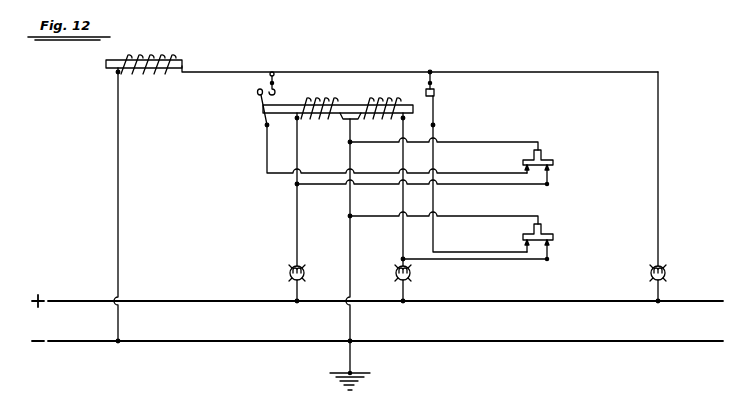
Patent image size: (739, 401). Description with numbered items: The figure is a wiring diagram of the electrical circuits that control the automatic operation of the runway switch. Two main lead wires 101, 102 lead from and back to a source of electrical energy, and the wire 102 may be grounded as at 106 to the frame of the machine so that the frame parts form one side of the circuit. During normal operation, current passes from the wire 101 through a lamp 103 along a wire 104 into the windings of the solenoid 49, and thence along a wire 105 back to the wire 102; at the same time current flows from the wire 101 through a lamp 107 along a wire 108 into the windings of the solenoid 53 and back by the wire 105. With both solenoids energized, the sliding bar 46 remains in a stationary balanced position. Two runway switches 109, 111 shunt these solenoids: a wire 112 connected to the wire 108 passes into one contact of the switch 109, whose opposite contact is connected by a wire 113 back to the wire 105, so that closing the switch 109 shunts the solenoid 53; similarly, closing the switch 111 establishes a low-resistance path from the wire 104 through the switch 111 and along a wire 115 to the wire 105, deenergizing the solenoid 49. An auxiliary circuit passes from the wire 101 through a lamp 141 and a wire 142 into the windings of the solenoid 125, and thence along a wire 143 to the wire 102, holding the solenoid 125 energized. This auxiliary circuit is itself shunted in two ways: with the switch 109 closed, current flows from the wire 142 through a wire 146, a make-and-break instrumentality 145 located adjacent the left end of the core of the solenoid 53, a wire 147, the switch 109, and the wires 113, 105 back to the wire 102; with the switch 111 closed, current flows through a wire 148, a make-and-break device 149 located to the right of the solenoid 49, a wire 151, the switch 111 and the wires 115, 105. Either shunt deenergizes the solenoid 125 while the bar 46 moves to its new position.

The solenoid 125 is at (175, 57).
The wire 143 is at (118, 141).
The wire 146 is at (271, 72).
The make-and-break instrumentality 145 is at (258, 94).
The solenoid 53 is at (315, 99).
The solenoid 49 is at (386, 99).
The sliding bar 46 is at (352, 105).
The wire 148 is at (431, 73).
The make-and-break device 149 is at (436, 92).
The wire 147 is at (267, 152).
The wire 108 is at (297, 222).
The wire 105 is at (350, 239).
The wire 104 is at (403, 239).
The wire 151 is at (435, 237).
The wire 113 is at (480, 142).
The switch 109 is at (545, 158).
The wire 112 is at (481, 184).
The wire 115 is at (526, 216).
The switch 111 is at (553, 232).
The wire 142 is at (658, 125).
The lamp 107 is at (290, 273).
The lamp 103 is at (411, 273).
The lamp 141 is at (666, 273).
The main lead wire 101 is at (100, 300).
The main lead wire 102 is at (96, 342).
The ground 106 is at (353, 372).